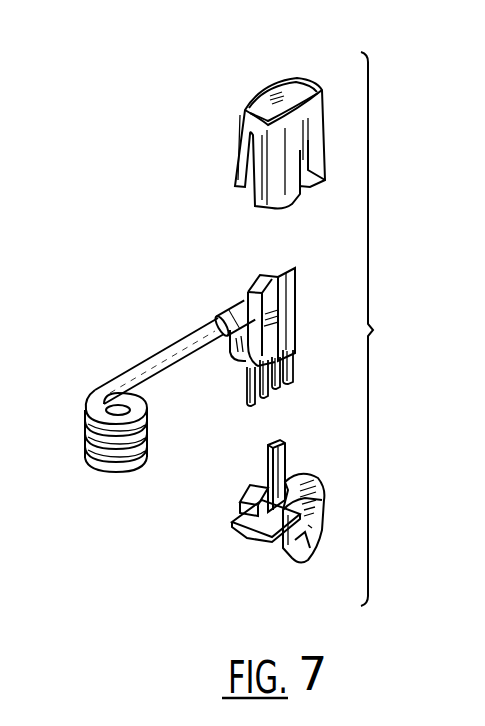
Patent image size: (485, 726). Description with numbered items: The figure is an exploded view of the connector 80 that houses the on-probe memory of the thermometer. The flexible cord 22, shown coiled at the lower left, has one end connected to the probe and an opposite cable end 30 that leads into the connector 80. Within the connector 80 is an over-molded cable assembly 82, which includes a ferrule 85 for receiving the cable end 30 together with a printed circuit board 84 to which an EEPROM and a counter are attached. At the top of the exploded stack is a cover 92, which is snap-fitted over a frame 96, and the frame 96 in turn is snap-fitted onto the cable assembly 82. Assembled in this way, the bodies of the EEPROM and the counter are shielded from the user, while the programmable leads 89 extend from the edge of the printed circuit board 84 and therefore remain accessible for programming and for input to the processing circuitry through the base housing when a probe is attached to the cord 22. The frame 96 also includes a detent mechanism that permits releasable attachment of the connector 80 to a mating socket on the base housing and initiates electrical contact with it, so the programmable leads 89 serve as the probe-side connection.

The connector 80 is at (410, 341).
The cover 92 is at (240, 122).
The over-molded cable assembly 82 is at (246, 252).
The printed circuit board 84 is at (290, 303).
The ferrule 85 is at (232, 312).
The programmable leads 89 is at (285, 385).
The cable end 30 is at (205, 344).
The flexible cord 22 is at (102, 385).
The frame 96 is at (236, 533).